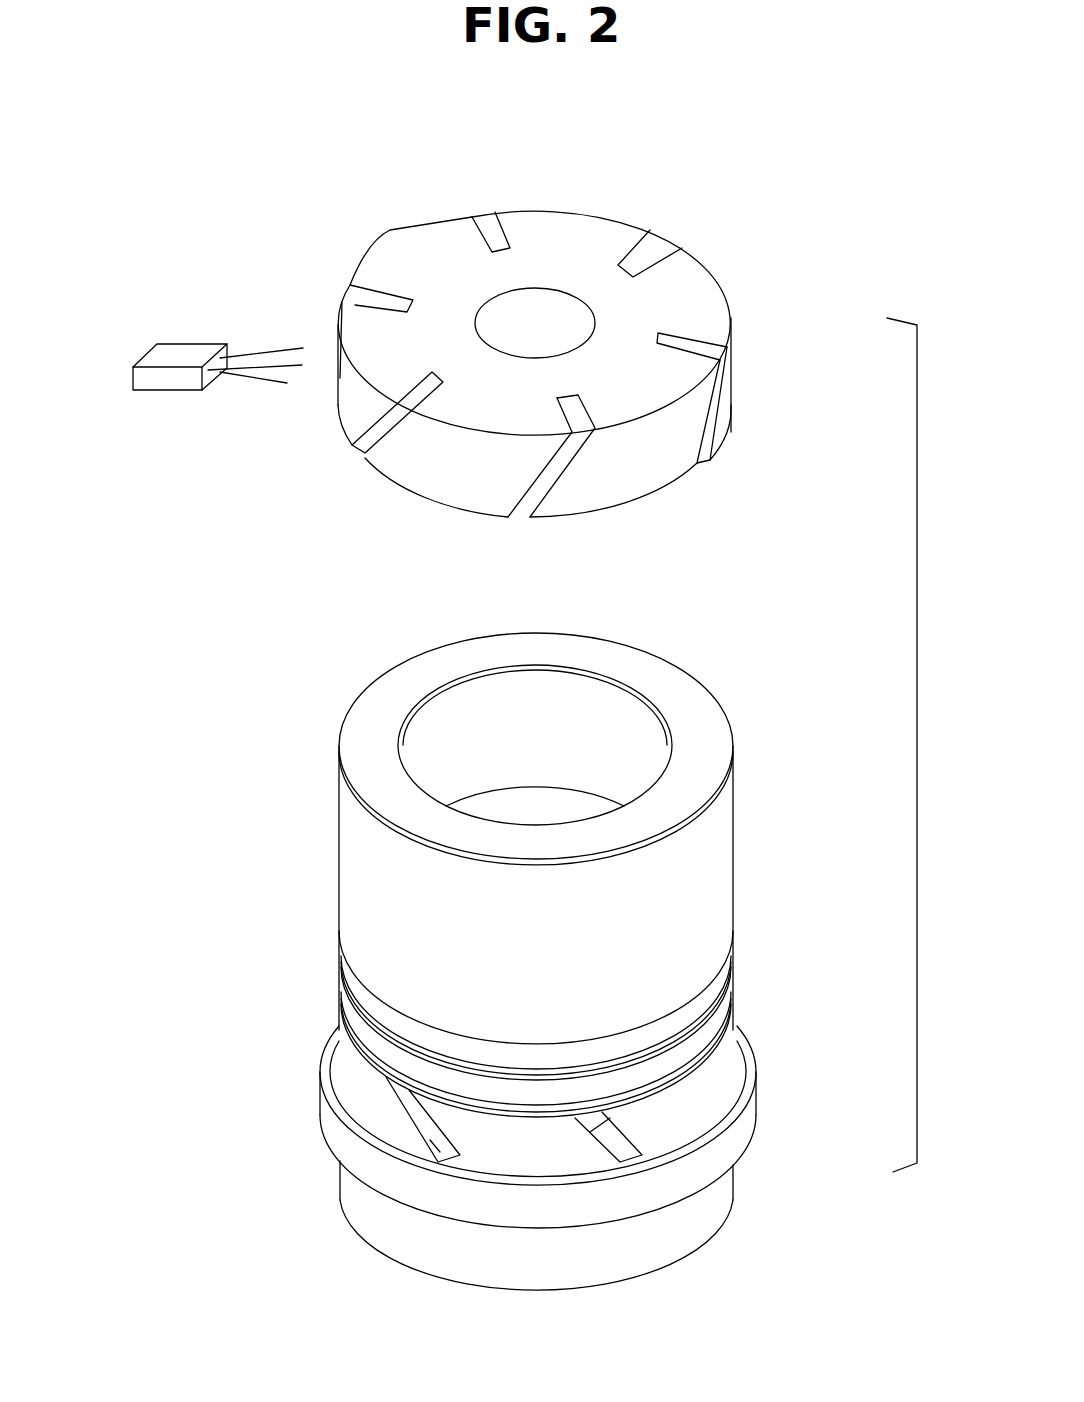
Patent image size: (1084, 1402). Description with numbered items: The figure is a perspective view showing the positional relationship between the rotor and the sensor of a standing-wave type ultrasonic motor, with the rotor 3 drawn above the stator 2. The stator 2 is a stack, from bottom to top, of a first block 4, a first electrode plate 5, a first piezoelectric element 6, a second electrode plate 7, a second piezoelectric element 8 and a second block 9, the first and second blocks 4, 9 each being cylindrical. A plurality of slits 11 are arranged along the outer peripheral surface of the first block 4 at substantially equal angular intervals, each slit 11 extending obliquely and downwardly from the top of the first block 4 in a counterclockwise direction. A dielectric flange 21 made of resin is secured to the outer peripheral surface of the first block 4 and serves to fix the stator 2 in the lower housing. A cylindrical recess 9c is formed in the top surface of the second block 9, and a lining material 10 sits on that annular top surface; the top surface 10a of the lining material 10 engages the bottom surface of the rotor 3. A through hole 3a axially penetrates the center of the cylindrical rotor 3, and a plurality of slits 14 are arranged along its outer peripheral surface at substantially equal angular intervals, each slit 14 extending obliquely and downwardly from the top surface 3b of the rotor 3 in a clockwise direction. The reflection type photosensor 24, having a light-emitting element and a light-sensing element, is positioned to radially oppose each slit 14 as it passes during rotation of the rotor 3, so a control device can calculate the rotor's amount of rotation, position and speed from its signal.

The stator 2 is at (476, 1017).
The rotor 3 is at (729, 436).
The through hole 3a is at (509, 342).
The top surface 3b is at (654, 410).
The first block 4 is at (498, 1060).
The first electrode plate 5 is at (326, 1050).
The first piezoelectric element 6 is at (338, 1020).
The second electrode plate 7 is at (340, 992).
The second piezoelectric element 8 is at (340, 977).
The second block 9 is at (340, 935).
The cylindrical recess 9c is at (445, 715).
The lining material 10 is at (345, 796).
The top surface 10a is at (687, 692).
The slits 11 is at (612, 1142).
The slits 14 is at (377, 298).
The dielectric flange 21 is at (740, 1128).
The photosensor 24 is at (163, 391).